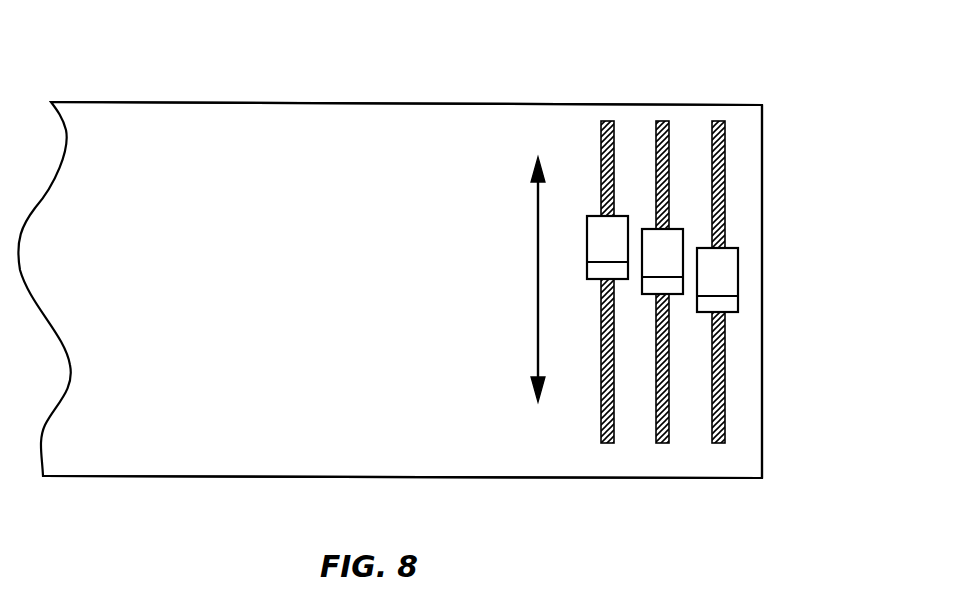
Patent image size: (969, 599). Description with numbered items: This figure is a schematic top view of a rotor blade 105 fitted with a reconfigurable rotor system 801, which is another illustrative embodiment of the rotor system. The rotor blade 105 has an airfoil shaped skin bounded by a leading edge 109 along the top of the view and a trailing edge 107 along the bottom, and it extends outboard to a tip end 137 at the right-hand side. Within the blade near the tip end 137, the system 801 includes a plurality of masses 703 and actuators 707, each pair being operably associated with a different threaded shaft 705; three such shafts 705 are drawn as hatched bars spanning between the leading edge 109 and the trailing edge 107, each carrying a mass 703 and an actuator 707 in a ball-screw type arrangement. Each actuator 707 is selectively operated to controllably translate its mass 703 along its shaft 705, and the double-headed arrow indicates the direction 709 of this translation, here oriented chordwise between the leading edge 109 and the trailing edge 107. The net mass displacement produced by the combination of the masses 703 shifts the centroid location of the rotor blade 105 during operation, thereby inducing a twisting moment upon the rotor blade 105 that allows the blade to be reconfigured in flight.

The reconfigurable rotor system 801 is at (325, 75).
The rotor blade 105 is at (182, 102).
The leading edge 109 is at (500, 100).
The tip end 137 is at (769, 122).
The trailing edge 107 is at (668, 487).
The threaded shaft 705 is at (725, 398).
The mass 703 is at (738, 263).
The actuator 707 is at (738, 305).
The direction 709 is at (537, 272).